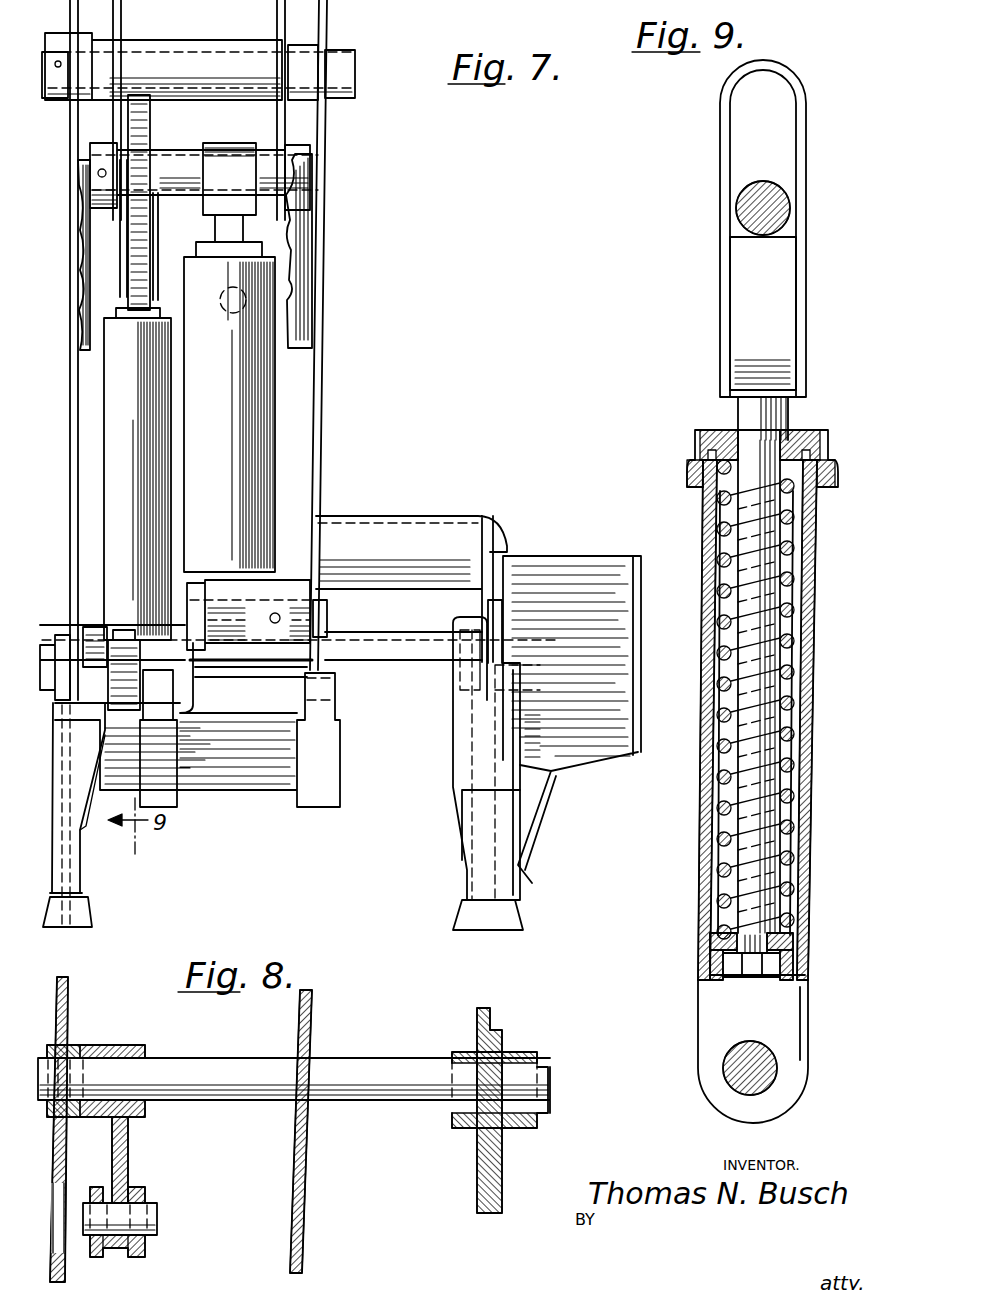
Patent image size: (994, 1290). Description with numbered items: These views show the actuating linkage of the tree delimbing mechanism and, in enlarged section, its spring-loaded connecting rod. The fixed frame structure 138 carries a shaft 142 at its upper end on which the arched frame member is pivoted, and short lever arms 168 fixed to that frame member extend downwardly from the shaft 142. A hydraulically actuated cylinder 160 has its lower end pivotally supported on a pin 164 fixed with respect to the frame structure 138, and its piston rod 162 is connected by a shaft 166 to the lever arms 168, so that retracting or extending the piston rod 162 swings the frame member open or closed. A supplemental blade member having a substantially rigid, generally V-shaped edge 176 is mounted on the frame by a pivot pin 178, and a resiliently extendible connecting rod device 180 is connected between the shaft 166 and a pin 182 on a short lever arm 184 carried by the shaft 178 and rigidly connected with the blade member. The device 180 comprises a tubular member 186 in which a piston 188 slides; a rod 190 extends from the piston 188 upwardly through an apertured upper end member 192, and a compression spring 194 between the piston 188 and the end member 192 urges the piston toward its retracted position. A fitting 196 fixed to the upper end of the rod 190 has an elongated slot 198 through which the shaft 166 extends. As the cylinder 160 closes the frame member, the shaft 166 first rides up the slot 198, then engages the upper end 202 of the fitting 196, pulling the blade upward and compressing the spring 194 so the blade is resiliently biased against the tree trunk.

In FIG. 7, the fixed frame structure 138 is at (318, 422).
In FIG. 7, the shaft 142 is at (350, 62).
In FIG. 7, the hydraulically actuated cylinder 160 is at (272, 466).
In FIG. 7, the piston rod 162 is at (330, 236).
In FIG. 7, the pin 164 is at (325, 622).
In FIG. 7, the shaft 166 is at (270, 169).
In FIG. 9, the shaft 166 is at (744, 204).
In FIG. 7, the lever arms 168 is at (113, 131).
In FIG. 7, the V-shaped edge 176 is at (656, 556).
In FIG. 7, the pivot pin 178 is at (42, 652).
In FIG. 8, the pivot pin 178 is at (247, 1101).
In FIG. 9, the resiliently extendible connecting rod device 180 is at (815, 578).
In FIG. 7, the pin 182 is at (90, 705).
In FIG. 9, the pin 182 is at (723, 1077).
In FIG. 8, the pin 182 is at (153, 1230).
In FIG. 8, the lever arm 184 is at (129, 1175).
In FIG. 7, the tubular member 186 is at (117, 490).
In FIG. 9, the tubular member 186 is at (808, 745).
In FIG. 9, the piston 188 is at (787, 947).
In FIG. 9, the rod 190 is at (773, 620).
In FIG. 9, the upper end member 192 is at (788, 420).
In FIG. 9, the compression spring 194 is at (787, 687).
In FIG. 7, the fitting 196 is at (133, 128).
In FIG. 9, the fitting 196 is at (805, 297).
In FIG. 9, the elongated slot 198 is at (785, 128).
In FIG. 9, the upper end 202 is at (781, 63).